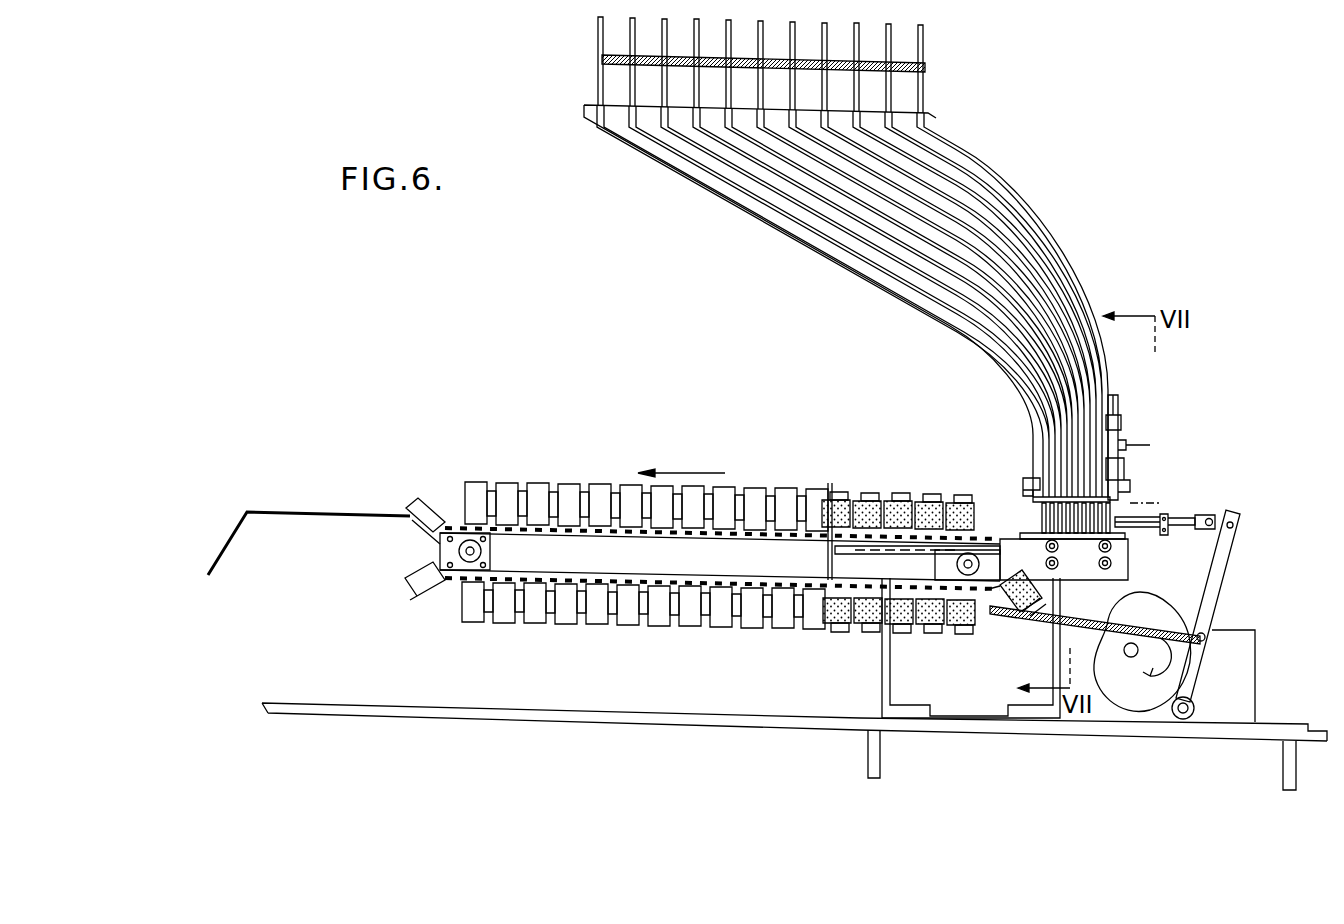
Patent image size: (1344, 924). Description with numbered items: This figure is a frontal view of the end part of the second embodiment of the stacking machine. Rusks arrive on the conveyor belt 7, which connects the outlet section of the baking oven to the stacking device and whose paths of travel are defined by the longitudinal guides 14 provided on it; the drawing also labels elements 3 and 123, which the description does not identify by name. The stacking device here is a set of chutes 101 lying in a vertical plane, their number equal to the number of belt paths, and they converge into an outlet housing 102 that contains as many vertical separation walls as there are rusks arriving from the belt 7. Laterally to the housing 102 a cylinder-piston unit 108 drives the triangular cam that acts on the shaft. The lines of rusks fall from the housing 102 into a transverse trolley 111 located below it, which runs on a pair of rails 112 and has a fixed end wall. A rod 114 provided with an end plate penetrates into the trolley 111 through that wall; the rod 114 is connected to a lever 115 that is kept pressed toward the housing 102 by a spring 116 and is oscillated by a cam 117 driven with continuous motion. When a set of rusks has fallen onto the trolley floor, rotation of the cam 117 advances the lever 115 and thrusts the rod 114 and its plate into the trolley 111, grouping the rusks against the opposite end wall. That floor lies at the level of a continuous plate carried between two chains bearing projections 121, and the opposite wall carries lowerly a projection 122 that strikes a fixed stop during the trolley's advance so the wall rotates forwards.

The pins 3 is at (750, 60).
The conveyor belt 7 is at (606, 63).
The longitudinal guides 14 is at (598, 33).
The set of chutes 101 is at (745, 198).
The outlet housing 102 is at (1033, 441).
The cylinder-piston unit 108 is at (1125, 432).
The transverse trolley 111 is at (1083, 553).
The rails 112 is at (1083, 548).
The rod 114 is at (1185, 518).
The lever 115 is at (1205, 596).
The spring 116 is at (1148, 520).
The cam 117 is at (1152, 612).
The projections 121 is at (836, 494).
The projection 122 is at (1008, 500).
The lower carrier blocks 123 is at (946, 578).